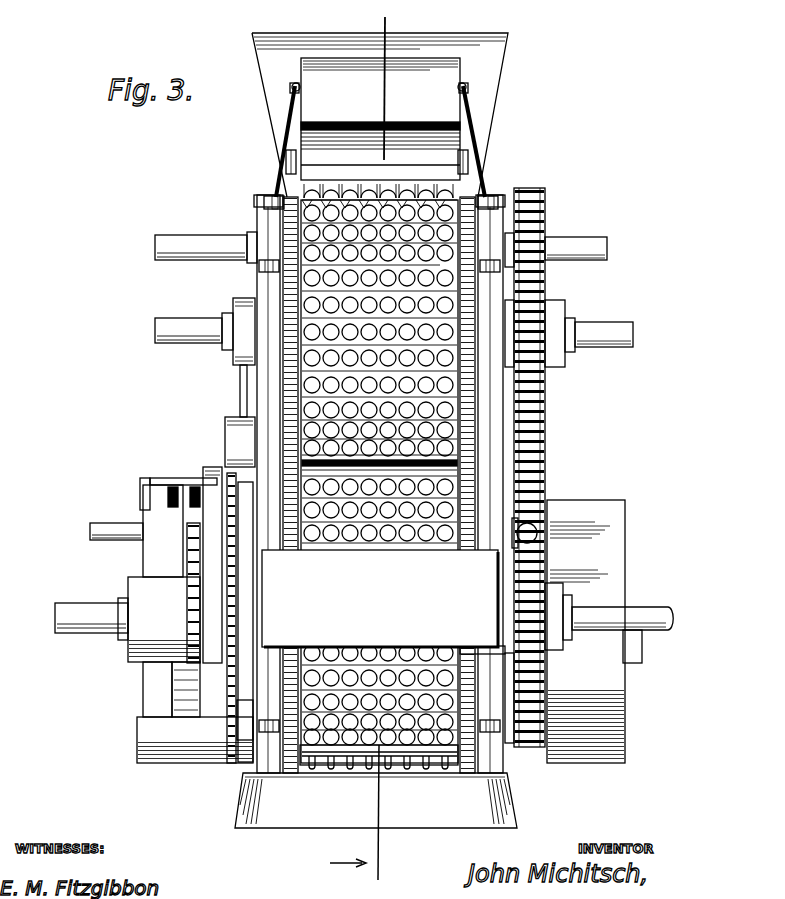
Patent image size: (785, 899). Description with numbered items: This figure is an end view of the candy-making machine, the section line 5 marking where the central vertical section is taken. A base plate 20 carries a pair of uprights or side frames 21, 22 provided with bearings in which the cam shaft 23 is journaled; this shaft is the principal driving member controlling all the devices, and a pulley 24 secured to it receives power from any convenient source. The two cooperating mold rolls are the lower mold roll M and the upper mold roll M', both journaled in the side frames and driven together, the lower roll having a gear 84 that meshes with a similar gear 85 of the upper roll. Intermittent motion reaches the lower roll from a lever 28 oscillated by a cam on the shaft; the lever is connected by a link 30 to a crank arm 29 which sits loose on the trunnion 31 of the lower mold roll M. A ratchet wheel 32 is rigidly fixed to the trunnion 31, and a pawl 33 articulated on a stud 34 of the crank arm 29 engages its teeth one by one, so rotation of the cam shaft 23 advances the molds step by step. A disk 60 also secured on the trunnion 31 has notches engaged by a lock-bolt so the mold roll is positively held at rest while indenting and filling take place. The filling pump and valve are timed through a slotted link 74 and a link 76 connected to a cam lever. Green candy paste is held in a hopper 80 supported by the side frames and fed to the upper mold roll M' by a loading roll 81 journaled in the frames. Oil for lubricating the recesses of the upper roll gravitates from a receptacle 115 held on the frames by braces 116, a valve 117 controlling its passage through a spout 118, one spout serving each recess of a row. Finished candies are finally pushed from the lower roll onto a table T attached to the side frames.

The section line 5 is at (387, 451).
The hopper 80 is at (487, 83).
The receptacle 115 is at (440, 104).
The braces 116 is at (288, 147).
The valve 117 is at (477, 166).
The spout 118 is at (330, 167).
The upper mold roll M' is at (308, 476).
The side frame 21 is at (266, 380).
The side frame 22 is at (490, 458).
The link 74 is at (240, 393).
The pawl 33 is at (194, 492).
The link 30 is at (173, 492).
The stud 34 is at (143, 492).
The crank arm 29 is at (163, 552).
The trunnion 31 is at (215, 613).
The lever 28 is at (150, 683).
The ratchet wheel 32 is at (193, 683).
The disk 60 is at (230, 737).
The link 76 is at (237, 680).
The loading roll 81 is at (215, 718).
The lower mold roll M is at (331, 796).
The base plate 20 is at (433, 818).
The large gear 85 is at (541, 405).
The gear 84 is at (534, 500).
The pulley 24 is at (607, 517).
The table T is at (473, 588).
The cam shaft 23 is at (641, 638).